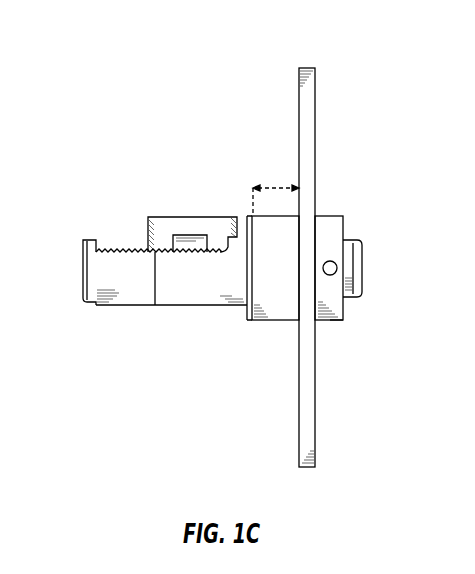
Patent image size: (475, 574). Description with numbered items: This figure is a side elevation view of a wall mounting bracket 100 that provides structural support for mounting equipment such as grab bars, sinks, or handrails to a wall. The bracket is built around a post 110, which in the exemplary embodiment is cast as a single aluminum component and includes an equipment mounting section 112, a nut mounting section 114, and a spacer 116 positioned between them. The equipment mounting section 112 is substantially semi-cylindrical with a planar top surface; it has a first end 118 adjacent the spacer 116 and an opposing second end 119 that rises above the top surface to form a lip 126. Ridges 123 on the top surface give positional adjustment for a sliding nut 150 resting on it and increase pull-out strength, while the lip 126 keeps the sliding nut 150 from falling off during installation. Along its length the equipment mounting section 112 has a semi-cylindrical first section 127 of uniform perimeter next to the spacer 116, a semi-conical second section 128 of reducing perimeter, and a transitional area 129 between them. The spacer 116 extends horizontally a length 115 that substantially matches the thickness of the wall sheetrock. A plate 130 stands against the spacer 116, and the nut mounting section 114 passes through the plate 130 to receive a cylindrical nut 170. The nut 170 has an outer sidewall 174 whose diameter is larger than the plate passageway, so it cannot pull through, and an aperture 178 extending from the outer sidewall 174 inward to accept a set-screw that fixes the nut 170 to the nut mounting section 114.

The wall mounting bracket 100 is at (358, 40).
The post 110 is at (105, 295).
The equipment mounting section 112 is at (197, 300).
The nut mounting section 114 is at (348, 298).
The length 115 is at (276, 183).
The spacer 116 is at (293, 320).
The first end 118 is at (243, 214).
The second end 119 is at (83, 272).
The ridge 123 is at (133, 250).
The lip 126 is at (92, 240).
The first section 127 is at (246, 298).
The second section 128 is at (88, 299).
The transitional area 129 is at (152, 305).
The plate 130 is at (310, 102).
The sliding nut 150 is at (195, 225).
The nut 170 is at (328, 222).
The outer sidewall 174 is at (336, 320).
The aperture 178 is at (337, 266).